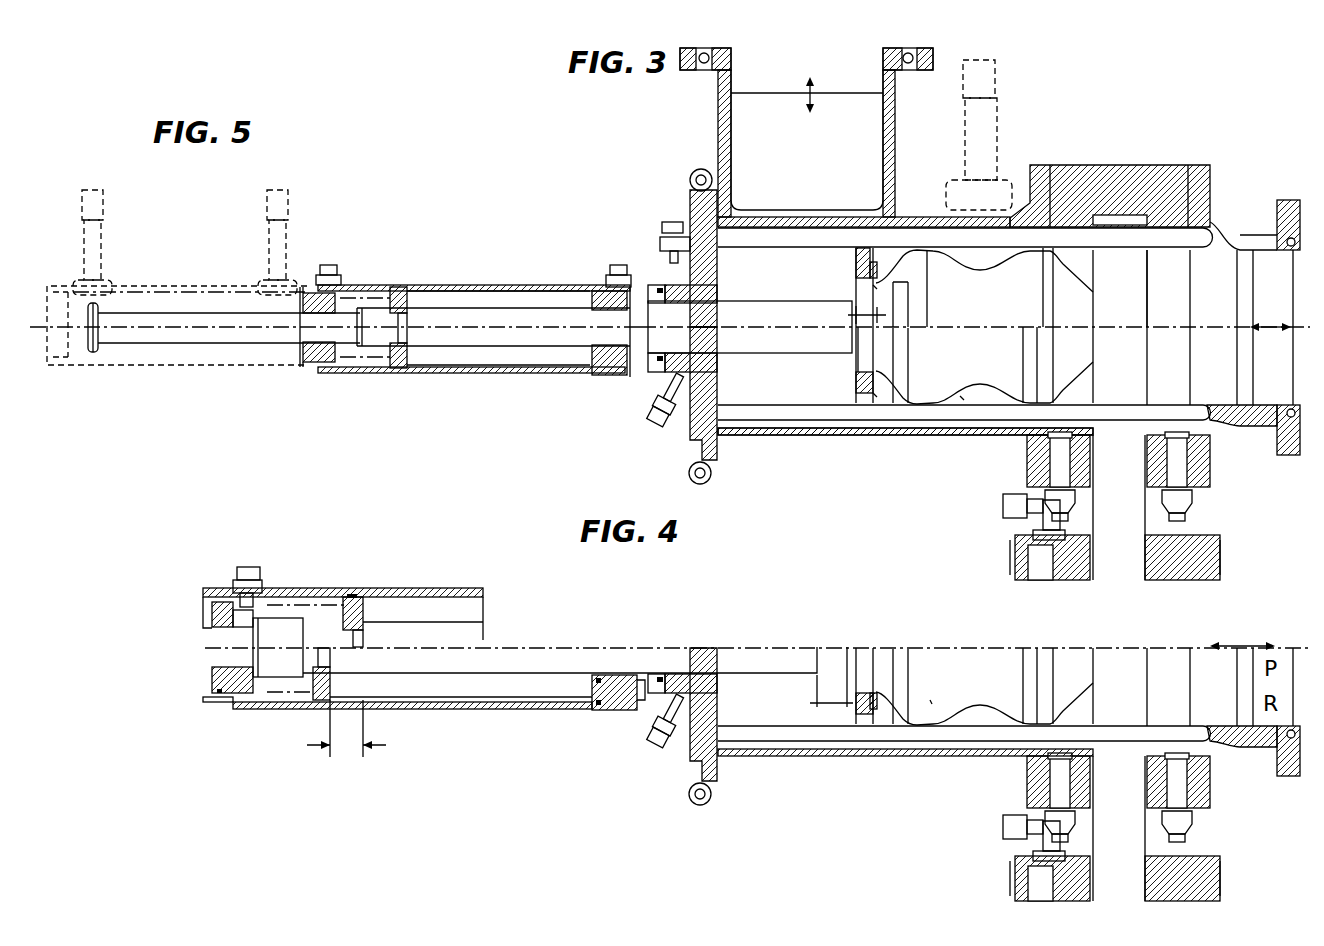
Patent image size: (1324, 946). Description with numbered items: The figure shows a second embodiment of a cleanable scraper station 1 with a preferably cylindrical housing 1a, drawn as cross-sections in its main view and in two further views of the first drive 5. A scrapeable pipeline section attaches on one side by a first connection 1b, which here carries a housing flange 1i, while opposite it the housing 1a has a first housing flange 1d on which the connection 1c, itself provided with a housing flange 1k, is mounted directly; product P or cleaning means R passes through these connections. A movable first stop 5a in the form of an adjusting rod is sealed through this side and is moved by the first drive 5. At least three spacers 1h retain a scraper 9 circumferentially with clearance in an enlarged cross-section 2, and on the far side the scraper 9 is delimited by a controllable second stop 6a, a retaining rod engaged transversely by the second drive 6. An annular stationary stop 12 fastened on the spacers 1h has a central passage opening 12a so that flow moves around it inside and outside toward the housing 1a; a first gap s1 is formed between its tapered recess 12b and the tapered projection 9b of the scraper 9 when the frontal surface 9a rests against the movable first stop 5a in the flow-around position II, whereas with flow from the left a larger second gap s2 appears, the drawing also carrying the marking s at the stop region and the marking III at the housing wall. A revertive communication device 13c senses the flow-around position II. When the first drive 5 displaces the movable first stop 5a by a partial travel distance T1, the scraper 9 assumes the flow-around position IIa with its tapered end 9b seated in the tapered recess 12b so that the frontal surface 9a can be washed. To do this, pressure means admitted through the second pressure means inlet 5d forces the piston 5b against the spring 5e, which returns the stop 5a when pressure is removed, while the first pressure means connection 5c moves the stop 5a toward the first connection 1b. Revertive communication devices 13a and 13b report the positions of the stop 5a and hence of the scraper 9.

In FIG. 3, the dispatching station 1 is at (1079, 163).
In FIG. 3, the housing 1a is at (853, 434).
In FIG. 3, the first connection 1b is at (1227, 246).
In FIG. 3, the connection 1c is at (724, 150).
In FIG. 3, the first housing flange 1d is at (709, 446).
In FIG. 3, the spacers 1h is at (762, 243).
In FIG. 3, the housing flange 1i is at (1290, 454).
In FIG. 3, the housing flange 1k is at (716, 74).
In FIG. 3, the enlarged cross-section 2 is at (888, 227).
In FIG. 4, the enlarged cross-section 2 is at (974, 750).
In FIG. 4, the first drive 5 is at (488, 704).
In FIG. 5, the first drive 5 is at (474, 329).
In FIG. 3, the movable first stop 5a is at (786, 352).
In FIG. 4, the movable first stop 5a is at (788, 672).
In FIG. 5, the movable first stop 5a is at (490, 318).
In FIG. 4, the piston 5b is at (352, 597).
In FIG. 5, the piston 5b is at (398, 287).
In FIG. 4, the first pressure means connection 5c is at (248, 567).
In FIG. 5, the first pressure means connection 5c is at (330, 265).
In FIG. 5, the second pressure means inlet 5d is at (617, 265).
In FIG. 4, the spring 5e is at (293, 606).
In FIG. 5, the spring 5e is at (365, 298).
In FIG. 3, the second drive 6 is at (1229, 558).
In FIG. 3, the controllable second stop 6a is at (1140, 390).
In FIG. 4, the controllable second stop 6a is at (1137, 711).
In FIG. 3, the scraper 9 is at (1013, 310).
In FIG. 4, the scraper 9 is at (973, 676).
In FIG. 3, the frontal surface 9a is at (1093, 298).
In FIG. 4, the frontal surface 9a is at (847, 655).
In FIG. 3, the tapered projection 9b is at (871, 291).
In FIG. 4, the tapered projection 9b is at (855, 705).
In FIG. 3, the stationary stop 12 is at (866, 395).
In FIG. 4, the stationary stop 12 is at (862, 714).
In FIG. 3, the passage opening 12a is at (858, 356).
In FIG. 3, the tapered recess 12b is at (855, 264).
In FIG. 4, the tapered recess 12b is at (876, 716).
In FIG. 5, the revertive communication device 13a is at (285, 212).
In FIG. 5, the revertive communication device 13b is at (100, 212).
In FIG. 3, the revertive communication device 13c is at (990, 86).
In FIG. 3, the gap s is at (862, 298).
In FIG. 3, the first gap s1 is at (878, 396).
In FIG. 3, the second gap s2 is at (875, 290).
In FIG. 3, the flow-around position II is at (962, 400).
In FIG. 4, the flow-around position IIa is at (931, 705).
In FIG. 3, the section line III is at (1158, 214).
In FIG. 4, the partial travel distance T1 is at (348, 748).